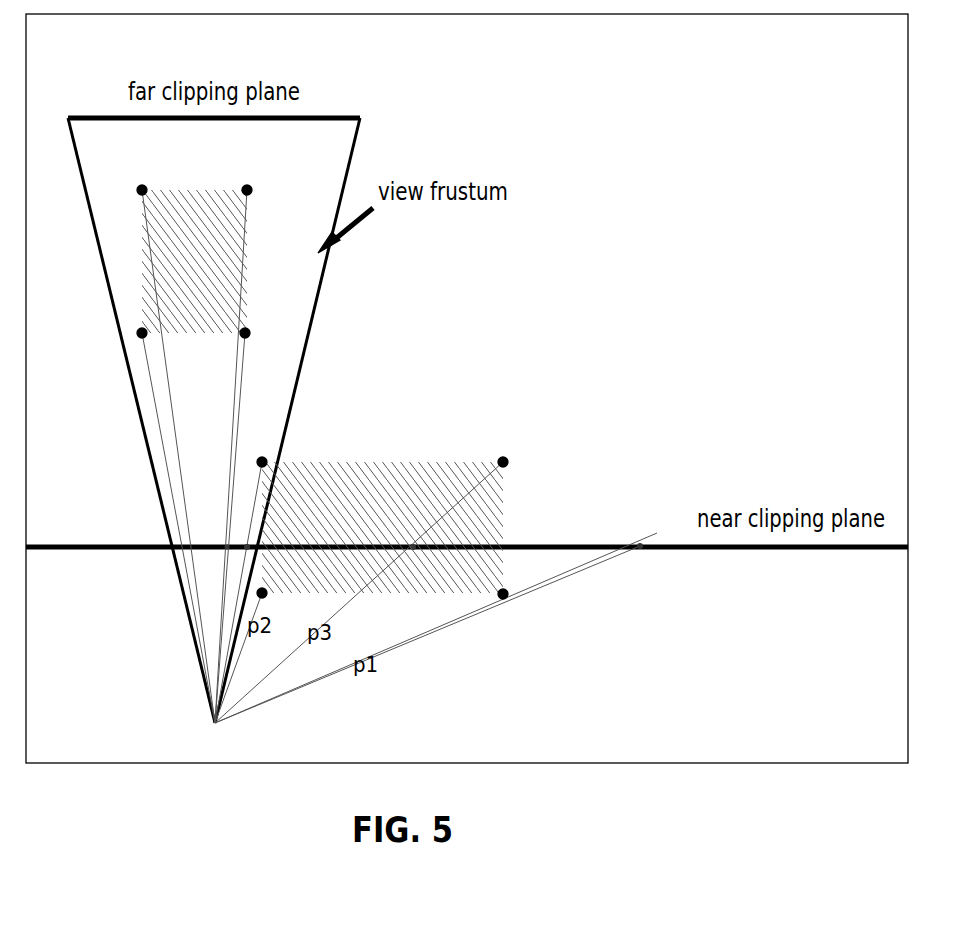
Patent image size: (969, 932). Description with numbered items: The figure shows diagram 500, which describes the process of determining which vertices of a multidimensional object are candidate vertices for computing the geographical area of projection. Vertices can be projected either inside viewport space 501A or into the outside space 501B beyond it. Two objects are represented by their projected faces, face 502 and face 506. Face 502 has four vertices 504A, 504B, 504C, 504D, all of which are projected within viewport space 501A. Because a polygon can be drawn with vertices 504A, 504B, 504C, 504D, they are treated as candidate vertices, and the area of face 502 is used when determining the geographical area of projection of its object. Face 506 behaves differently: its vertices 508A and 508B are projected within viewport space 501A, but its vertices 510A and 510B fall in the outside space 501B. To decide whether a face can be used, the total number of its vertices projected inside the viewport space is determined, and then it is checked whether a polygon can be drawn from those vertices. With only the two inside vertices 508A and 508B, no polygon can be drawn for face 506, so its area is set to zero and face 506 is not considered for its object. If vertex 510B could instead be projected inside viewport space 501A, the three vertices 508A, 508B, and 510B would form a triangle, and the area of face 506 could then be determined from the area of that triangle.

The diagram 500 is at (467, 431).
The viewport space 501A is at (805, 236).
The outside space 501B is at (787, 673).
The face 502 is at (223, 257).
The vertex 504A is at (245, 333).
The vertex 504B is at (247, 190).
The vertex 504C is at (142, 190).
The vertex 504D is at (142, 333).
The face 506 is at (440, 509).
The vertex 508A is at (262, 462).
The vertex 508B is at (503, 462).
The vertex 510A is at (262, 593).
The vertex 510B is at (503, 594).